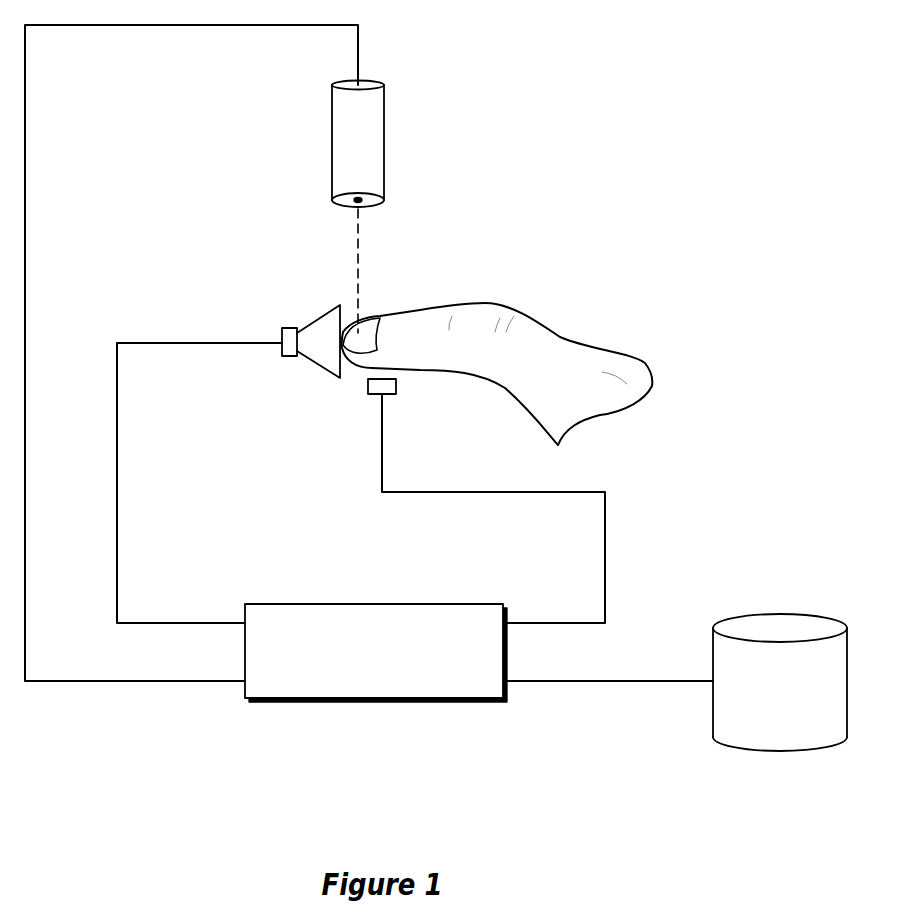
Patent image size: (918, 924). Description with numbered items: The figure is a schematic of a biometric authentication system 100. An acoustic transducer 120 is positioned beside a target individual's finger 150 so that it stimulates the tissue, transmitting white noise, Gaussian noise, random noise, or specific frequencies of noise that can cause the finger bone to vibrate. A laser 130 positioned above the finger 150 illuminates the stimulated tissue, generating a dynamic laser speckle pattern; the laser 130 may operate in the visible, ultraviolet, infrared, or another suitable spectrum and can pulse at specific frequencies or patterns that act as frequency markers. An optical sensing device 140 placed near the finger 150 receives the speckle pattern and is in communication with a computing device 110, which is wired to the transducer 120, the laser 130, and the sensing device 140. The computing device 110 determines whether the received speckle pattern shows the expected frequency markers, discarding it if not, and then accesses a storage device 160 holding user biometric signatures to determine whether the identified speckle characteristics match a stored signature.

The biometric authentication system 100 is at (565, 52).
The computing device 110 is at (376, 653).
The acoustic transducer 120 is at (307, 318).
The laser 130 is at (381, 130).
The optical sensing device 140 is at (369, 395).
The finger 150 is at (414, 318).
The storage device 160 is at (780, 682).